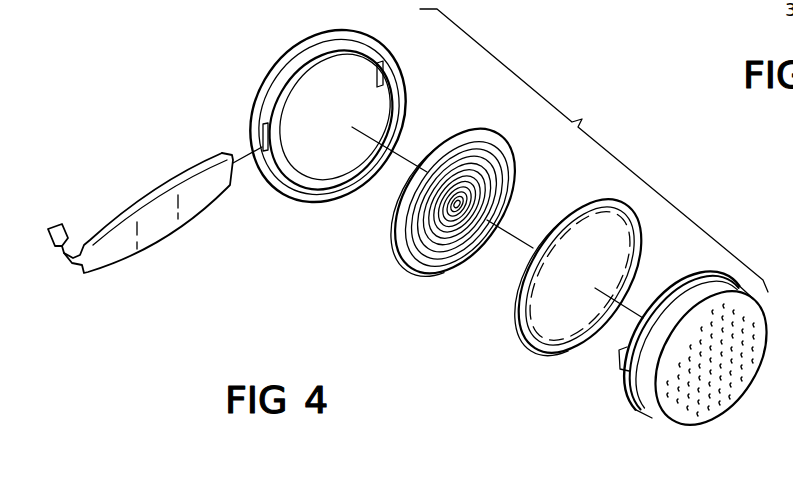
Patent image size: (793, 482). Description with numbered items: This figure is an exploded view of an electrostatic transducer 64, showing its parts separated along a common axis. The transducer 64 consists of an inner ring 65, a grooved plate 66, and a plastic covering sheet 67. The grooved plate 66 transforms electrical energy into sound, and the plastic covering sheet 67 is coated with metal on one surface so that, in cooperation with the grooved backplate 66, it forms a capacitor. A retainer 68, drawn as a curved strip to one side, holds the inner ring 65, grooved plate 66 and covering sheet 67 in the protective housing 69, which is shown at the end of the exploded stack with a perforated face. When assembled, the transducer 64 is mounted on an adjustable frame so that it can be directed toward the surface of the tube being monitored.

The transducer 64 is at (594, 150).
The inner ring 65 is at (384, 38).
The grooved plate 66 is at (515, 153).
The plastic covering sheet 67 is at (645, 257).
The retainer 68 is at (116, 221).
The protective housing 69 is at (622, 396).